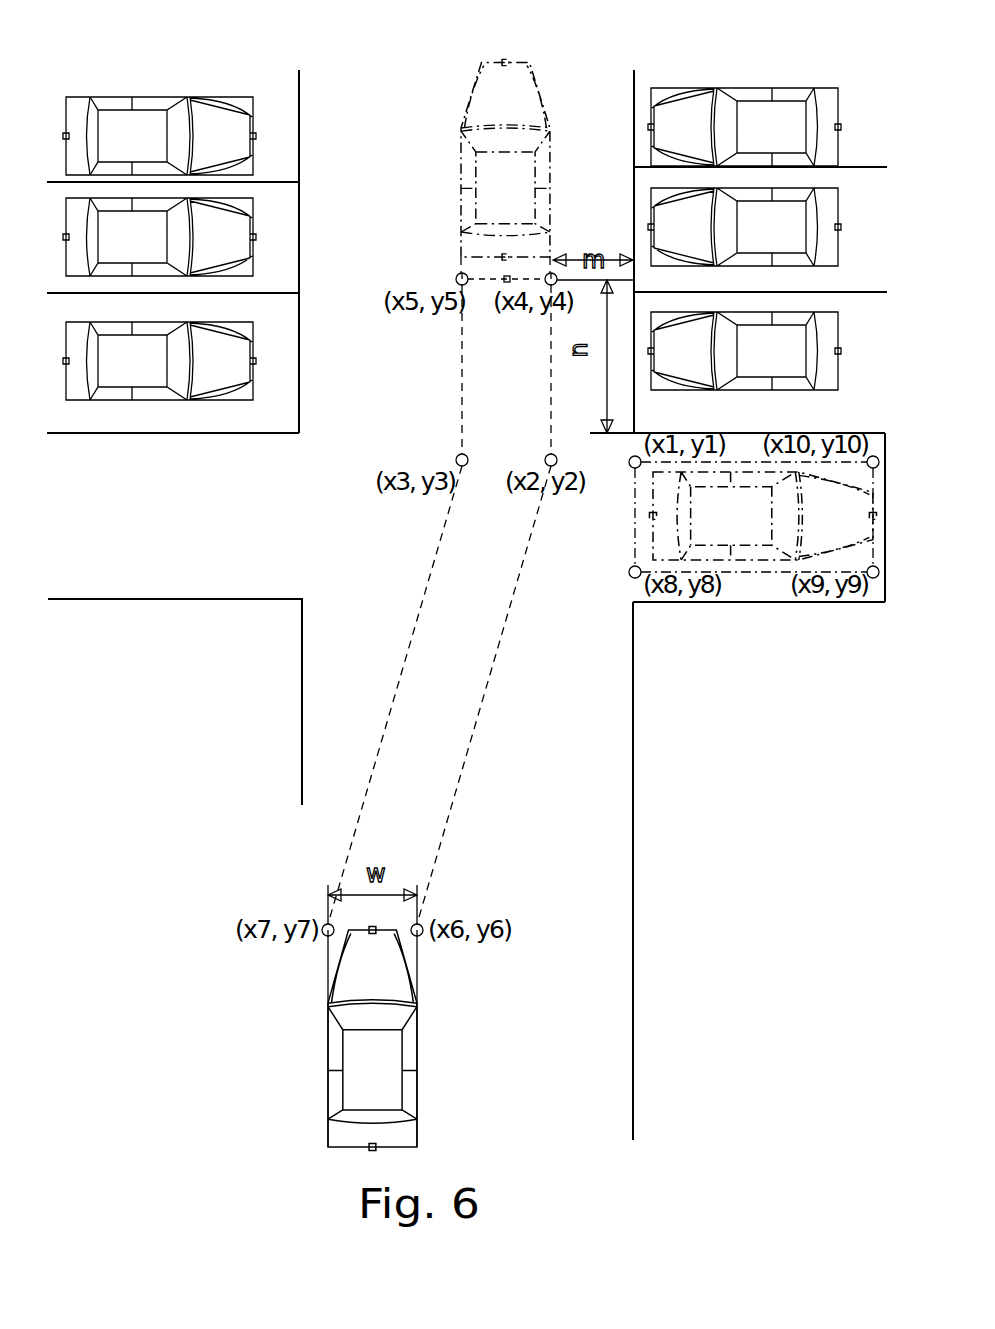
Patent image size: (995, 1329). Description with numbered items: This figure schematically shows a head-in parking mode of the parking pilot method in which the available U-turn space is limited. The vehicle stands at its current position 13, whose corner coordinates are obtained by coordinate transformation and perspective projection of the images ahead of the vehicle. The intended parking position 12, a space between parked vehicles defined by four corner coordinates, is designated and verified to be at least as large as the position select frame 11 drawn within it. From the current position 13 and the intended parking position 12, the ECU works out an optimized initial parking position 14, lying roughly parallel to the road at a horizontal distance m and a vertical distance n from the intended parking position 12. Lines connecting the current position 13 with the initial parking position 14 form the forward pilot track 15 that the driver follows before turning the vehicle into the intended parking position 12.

The position select frame 11 is at (793, 572).
The intended parking position 12 is at (830, 602).
The current position 13 is at (328, 1062).
The initial parking position 14 is at (465, 120).
The pilot track 15 is at (417, 620).